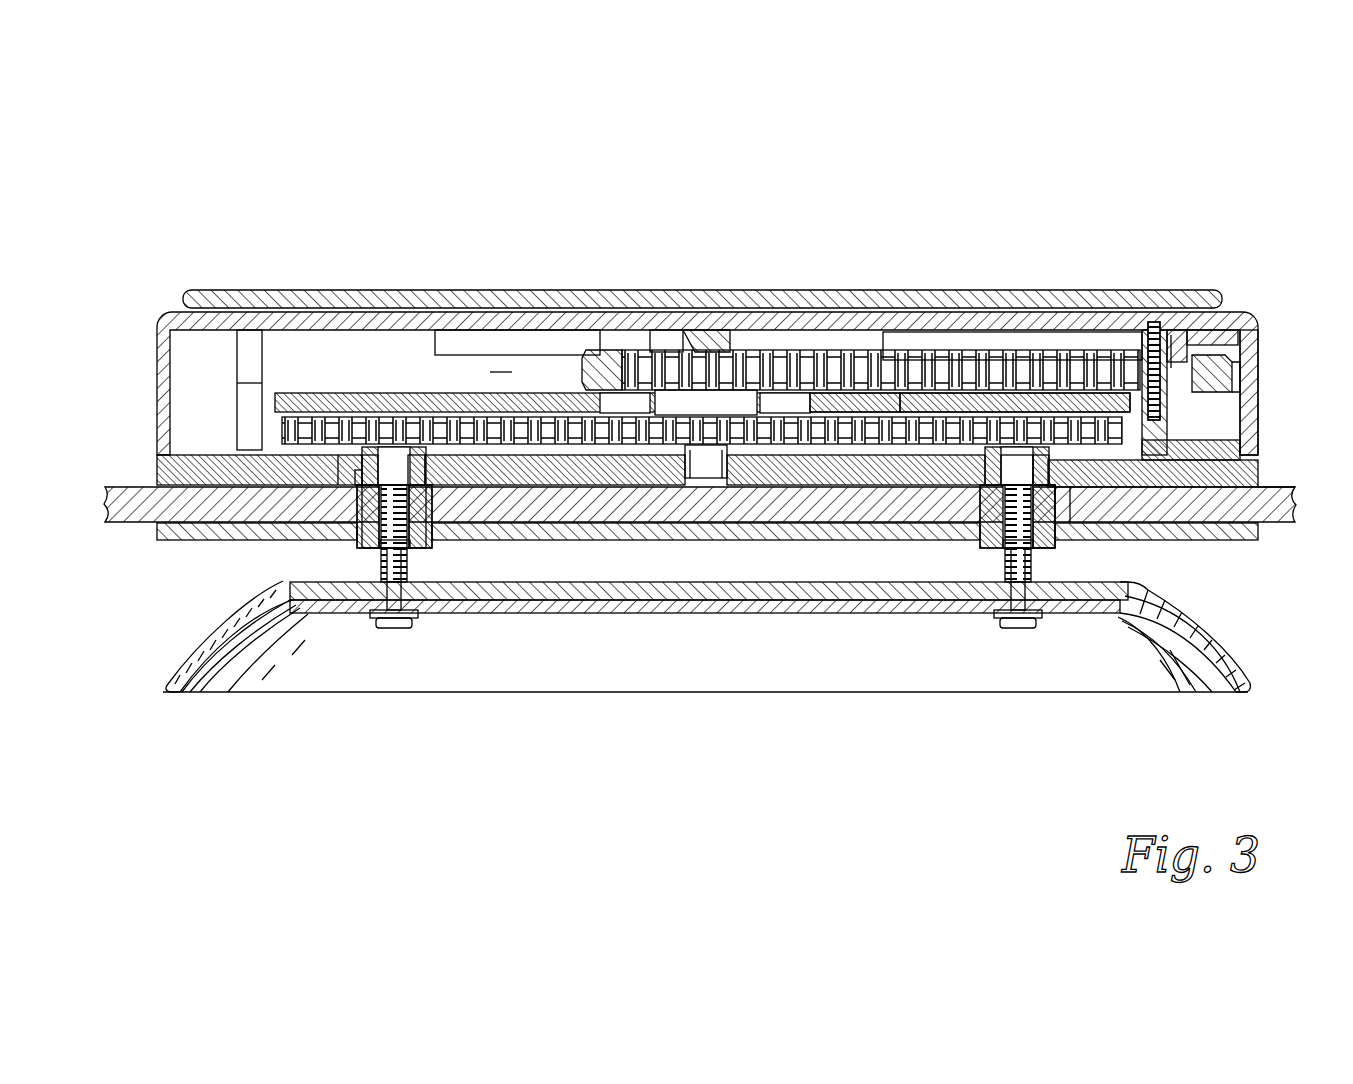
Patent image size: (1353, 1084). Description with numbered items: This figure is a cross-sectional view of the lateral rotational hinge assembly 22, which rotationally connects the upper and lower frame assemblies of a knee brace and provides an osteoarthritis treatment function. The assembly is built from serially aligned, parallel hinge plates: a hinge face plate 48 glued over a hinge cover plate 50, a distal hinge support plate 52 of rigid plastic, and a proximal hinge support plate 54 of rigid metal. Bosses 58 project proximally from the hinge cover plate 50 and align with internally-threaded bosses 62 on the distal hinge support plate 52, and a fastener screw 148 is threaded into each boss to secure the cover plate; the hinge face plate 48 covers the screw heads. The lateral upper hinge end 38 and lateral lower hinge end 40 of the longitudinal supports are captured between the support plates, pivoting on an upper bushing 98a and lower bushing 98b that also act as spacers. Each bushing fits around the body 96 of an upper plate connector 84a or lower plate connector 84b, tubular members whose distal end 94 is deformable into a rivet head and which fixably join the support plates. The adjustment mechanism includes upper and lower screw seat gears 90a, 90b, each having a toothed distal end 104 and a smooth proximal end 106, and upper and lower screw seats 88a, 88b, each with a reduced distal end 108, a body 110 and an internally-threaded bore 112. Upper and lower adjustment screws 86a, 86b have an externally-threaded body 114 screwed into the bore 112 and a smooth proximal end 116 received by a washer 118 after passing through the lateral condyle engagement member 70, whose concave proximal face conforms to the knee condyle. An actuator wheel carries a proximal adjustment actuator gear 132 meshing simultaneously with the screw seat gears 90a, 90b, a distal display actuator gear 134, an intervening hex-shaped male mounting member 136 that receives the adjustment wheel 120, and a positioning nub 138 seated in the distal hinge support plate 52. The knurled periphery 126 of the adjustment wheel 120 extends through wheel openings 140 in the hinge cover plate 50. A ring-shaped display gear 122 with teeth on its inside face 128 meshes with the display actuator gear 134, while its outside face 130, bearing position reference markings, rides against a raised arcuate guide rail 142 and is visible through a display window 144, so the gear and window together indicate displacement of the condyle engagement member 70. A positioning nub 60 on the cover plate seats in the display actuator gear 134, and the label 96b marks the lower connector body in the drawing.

The lateral rotational hinge assembly 22 is at (805, 198).
The lateral upper hinge end 38 is at (1265, 545).
The lateral lower hinge end 40 is at (140, 500).
The hinge face plate 48 is at (245, 313).
The hinge cover plate 50 is at (183, 300).
The distal hinge support plate 52 is at (1258, 462).
The proximal hinge support plate 54 is at (180, 533).
The bosses 58 is at (237, 355).
The positioning nub 60 is at (745, 380).
The internally-threaded bosses 62 is at (282, 430).
The lateral condyle engagement member 70 is at (275, 680).
The upper plate connector 84a is at (1070, 570).
The lower plate connector 84b is at (352, 575).
The upper adjustment screw 86a is at (998, 590).
The lower adjustment screw 86b is at (372, 590).
The upper screw seat 88a is at (1130, 600).
The lower screw seat 88b is at (410, 600).
The upper screw seat gear 90a is at (1165, 440).
The lower screw seat gear 90b is at (200, 465).
The distal end 94 is at (338, 455).
The body 96 is at (355, 540).
The bushing wall 96b is at (365, 535).
The upper bushing 98a is at (1055, 525).
The lower bushing 98b is at (365, 520).
The distal end 104 is at (427, 468).
The proximal end 106 is at (425, 515).
The distal end 108 is at (381, 470).
The body 110 is at (405, 570).
The internally-threaded bore 112 is at (398, 470).
The externally-threaded body 114 is at (404, 480).
The proximal end 116 is at (388, 622).
The washer 118 is at (407, 590).
The adjustment wheel 120 is at (366, 455).
The display gear 122 is at (830, 375).
The knurled periphery 126 is at (280, 400).
The inside face 128 is at (920, 398).
The outside face 130 is at (1240, 348).
The adjustment actuator gear 132 is at (705, 345).
The display actuator gear 134 is at (660, 365).
The hex-shaped male mounting member 136 is at (600, 370).
The positioning nub 138 is at (710, 478).
The wheel openings 140 is at (500, 350).
The raised arcuate guide rail 142 is at (1045, 355).
The display window 144 is at (1235, 370).
The fastener screw 148 is at (1150, 360).